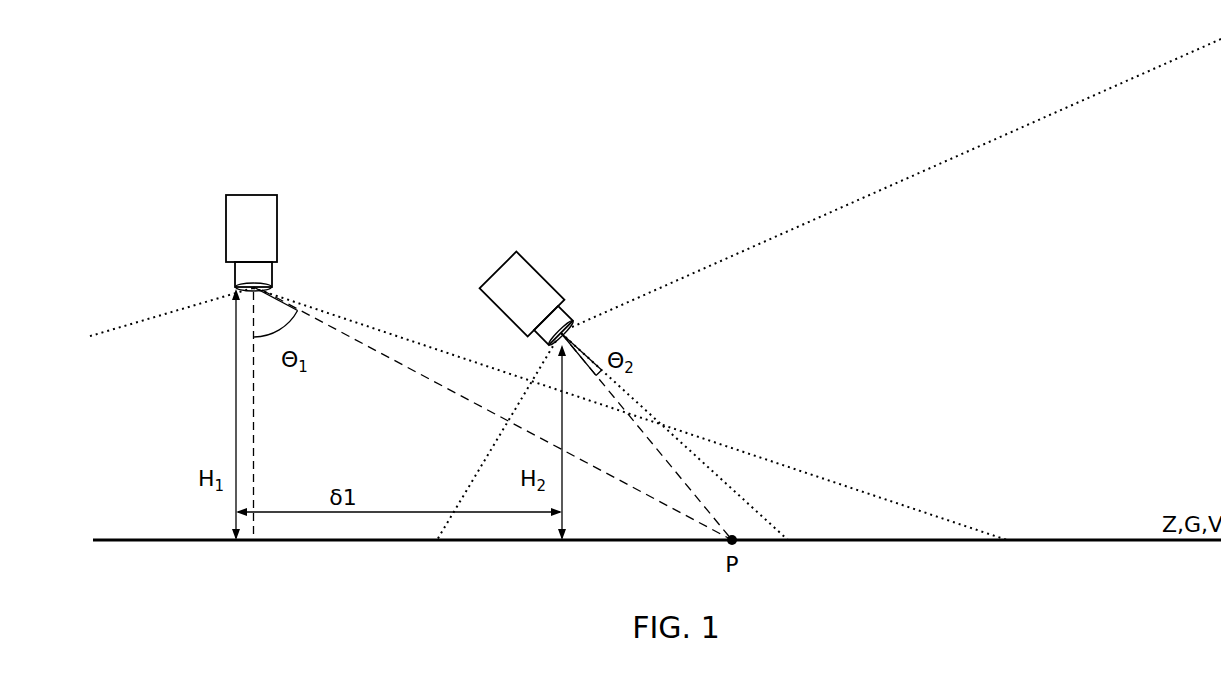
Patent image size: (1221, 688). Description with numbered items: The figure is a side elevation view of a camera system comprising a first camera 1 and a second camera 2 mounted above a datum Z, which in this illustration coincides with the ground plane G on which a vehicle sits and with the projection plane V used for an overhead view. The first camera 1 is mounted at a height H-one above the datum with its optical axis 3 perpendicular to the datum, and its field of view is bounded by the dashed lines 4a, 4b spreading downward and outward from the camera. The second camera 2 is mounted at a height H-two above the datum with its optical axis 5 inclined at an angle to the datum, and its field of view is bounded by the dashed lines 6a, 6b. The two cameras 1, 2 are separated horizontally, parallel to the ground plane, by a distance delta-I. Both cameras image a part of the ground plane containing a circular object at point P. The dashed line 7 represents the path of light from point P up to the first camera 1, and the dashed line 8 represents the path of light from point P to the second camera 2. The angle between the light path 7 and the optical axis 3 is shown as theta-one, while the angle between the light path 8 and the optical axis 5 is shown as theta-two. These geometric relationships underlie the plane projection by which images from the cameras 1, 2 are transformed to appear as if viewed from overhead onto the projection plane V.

The first camera 1 is at (251, 227).
The second camera 2 is at (529, 298).
The optical axis 3 is at (254, 443).
The dashed line 4a is at (130, 323).
The dashed line 4b is at (362, 323).
The optical axis 5 is at (765, 522).
The dashed line 6a is at (472, 487).
The dashed line 6b is at (735, 256).
The dashed line 7 is at (632, 489).
The dashed line 8 is at (677, 472).